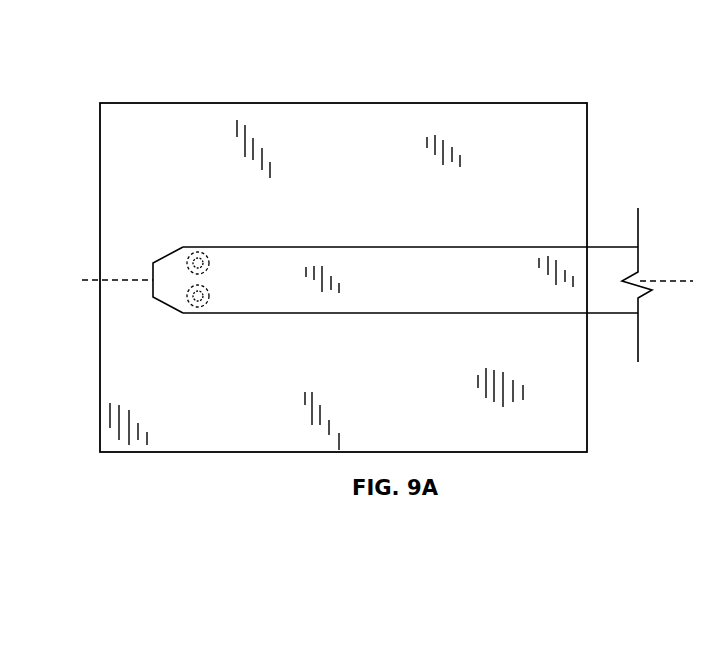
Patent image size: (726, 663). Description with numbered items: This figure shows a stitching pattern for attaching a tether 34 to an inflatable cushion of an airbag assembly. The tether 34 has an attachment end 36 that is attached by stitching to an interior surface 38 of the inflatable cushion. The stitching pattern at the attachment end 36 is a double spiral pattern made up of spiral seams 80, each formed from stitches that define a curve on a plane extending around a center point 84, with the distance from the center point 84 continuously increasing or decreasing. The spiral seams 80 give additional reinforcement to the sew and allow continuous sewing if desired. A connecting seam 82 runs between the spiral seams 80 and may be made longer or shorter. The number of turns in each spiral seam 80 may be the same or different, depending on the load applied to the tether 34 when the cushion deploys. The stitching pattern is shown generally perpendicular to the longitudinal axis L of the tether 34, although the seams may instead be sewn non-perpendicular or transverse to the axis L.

The tether 34 is at (389, 275).
The attachment end 36 is at (183, 327).
The interior surface 38 is at (568, 172).
The spiral seams 80 is at (207, 257).
The connecting seam 82 is at (206, 287).
The center point 84 is at (191, 253).
The longitudinal axis L is at (677, 280).